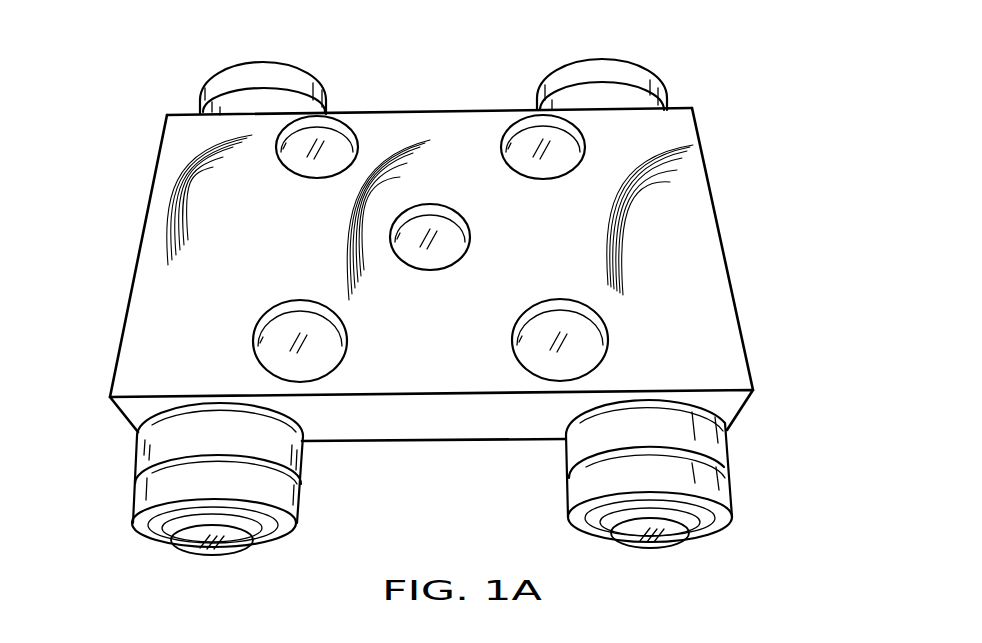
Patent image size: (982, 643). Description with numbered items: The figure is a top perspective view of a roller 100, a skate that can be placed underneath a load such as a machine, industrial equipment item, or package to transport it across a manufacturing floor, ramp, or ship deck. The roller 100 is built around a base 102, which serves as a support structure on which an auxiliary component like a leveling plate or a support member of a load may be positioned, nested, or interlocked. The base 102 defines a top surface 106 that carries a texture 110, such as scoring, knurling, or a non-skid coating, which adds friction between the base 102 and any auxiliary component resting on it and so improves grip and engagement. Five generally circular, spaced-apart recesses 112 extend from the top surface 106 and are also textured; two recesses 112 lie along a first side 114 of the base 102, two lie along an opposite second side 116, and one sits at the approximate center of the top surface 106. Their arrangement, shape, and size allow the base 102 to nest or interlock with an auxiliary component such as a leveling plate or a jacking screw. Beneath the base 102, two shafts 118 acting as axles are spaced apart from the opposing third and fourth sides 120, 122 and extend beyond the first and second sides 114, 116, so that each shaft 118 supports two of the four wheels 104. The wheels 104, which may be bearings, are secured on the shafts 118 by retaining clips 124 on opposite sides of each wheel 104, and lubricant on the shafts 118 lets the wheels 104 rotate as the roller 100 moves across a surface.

The roller 100 is at (130, 107).
The base 102 is at (750, 367).
The wheels 104 is at (588, 60).
The top surface 106 is at (687, 255).
The texture 110 is at (678, 137).
The recesses 112 is at (330, 140).
The first side 114 is at (435, 413).
The second side 116 is at (423, 110).
The shafts 118 is at (215, 555).
The third side 120 is at (728, 260).
The fourth side 122 is at (142, 232).
The retaining clips 124 is at (177, 405).